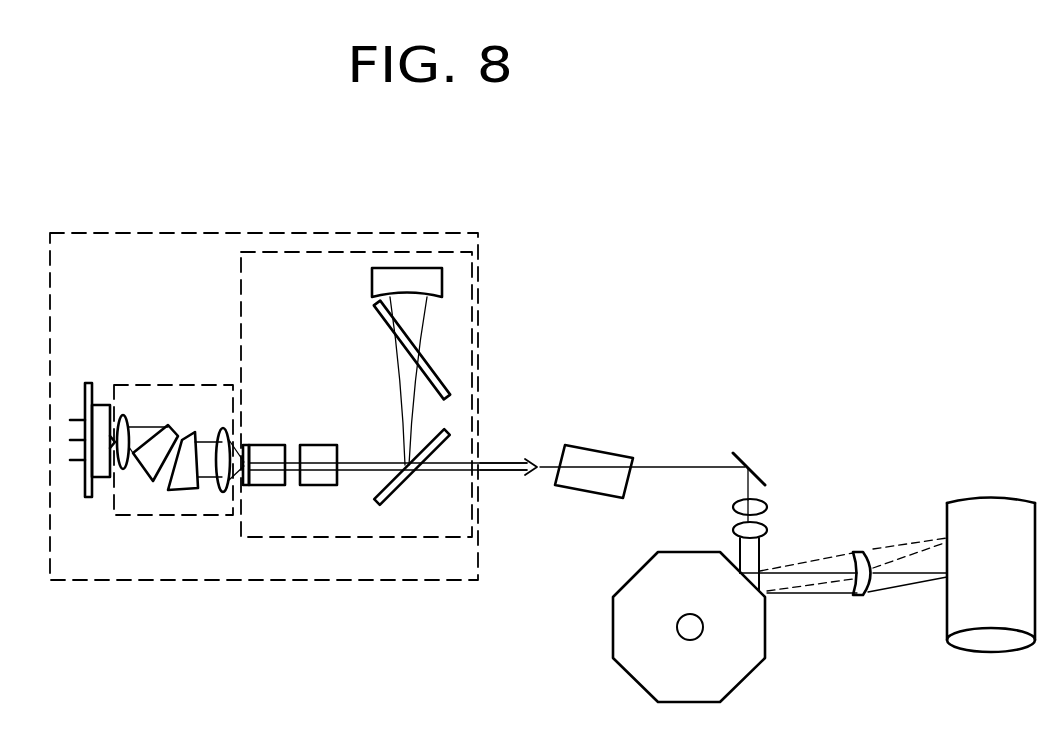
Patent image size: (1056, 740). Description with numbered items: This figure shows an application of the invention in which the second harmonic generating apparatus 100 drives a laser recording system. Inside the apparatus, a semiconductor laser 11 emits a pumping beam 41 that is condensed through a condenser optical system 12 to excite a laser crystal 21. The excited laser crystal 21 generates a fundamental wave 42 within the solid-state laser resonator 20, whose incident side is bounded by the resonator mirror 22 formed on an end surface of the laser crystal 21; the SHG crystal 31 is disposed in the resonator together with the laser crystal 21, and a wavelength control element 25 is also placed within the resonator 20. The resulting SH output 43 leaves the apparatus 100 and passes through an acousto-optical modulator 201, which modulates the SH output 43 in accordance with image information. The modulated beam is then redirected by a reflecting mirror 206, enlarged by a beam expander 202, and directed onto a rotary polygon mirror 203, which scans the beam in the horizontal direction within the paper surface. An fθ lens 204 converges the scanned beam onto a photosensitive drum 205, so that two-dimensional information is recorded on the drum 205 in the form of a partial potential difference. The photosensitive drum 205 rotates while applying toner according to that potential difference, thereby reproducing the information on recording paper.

The second harmonic generating apparatus 100 is at (292, 232).
The solid-state laser resonator 20 is at (240, 302).
The condenser optical system 12 is at (151, 385).
The semiconductor laser 11 is at (85, 400).
The pumping beam 41 is at (210, 480).
The resonator mirror on the incident side 22 is at (256, 487).
The laser crystal 21 is at (251, 445).
The SHG crystal 31 is at (306, 445).
The SH output 43 is at (487, 463).
The fundamental wave 42 is at (398, 400).
The wavelength control element 25 is at (436, 393).
The acousto-optical modulator 201 is at (590, 445).
The reflecting mirror 206 is at (742, 450).
The beam expander 202 is at (768, 508).
The rotary polygon mirror 203 is at (620, 655).
The fθ lens 204 is at (865, 551).
The photosensitive drum 205 is at (980, 508).